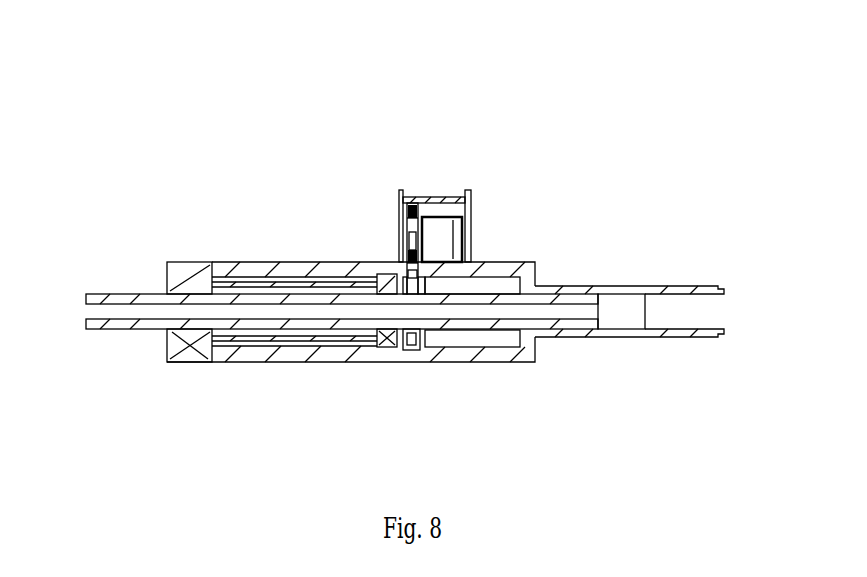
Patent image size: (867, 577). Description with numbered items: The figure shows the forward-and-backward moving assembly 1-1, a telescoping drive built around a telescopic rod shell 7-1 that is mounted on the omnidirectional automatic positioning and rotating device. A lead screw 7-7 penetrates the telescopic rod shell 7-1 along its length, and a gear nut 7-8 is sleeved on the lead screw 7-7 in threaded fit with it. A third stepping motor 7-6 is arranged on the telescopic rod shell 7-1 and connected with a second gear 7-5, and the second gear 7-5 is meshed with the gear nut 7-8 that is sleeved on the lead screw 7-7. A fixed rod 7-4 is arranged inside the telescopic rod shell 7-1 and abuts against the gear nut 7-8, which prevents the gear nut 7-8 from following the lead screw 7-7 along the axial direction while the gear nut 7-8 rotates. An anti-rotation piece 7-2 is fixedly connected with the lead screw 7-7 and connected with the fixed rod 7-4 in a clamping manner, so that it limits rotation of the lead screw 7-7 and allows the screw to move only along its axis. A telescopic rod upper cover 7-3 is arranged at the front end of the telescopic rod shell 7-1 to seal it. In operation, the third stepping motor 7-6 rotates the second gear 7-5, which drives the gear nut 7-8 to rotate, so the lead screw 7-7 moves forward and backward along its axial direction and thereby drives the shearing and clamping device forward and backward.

The forward-and-backward moving assembly 1-1 is at (352, 184).
The telescopic rod shell 7-1 is at (388, 266).
The anti-rotation piece 7-2 is at (387, 337).
The telescopic rod upper cover 7-3 is at (198, 347).
The fixed rod 7-4 is at (313, 338).
The second gear 7-5 is at (423, 217).
The third stepping motor 7-6 is at (438, 234).
The lead screw 7-7 is at (543, 324).
The gear nut 7-8 is at (460, 346).